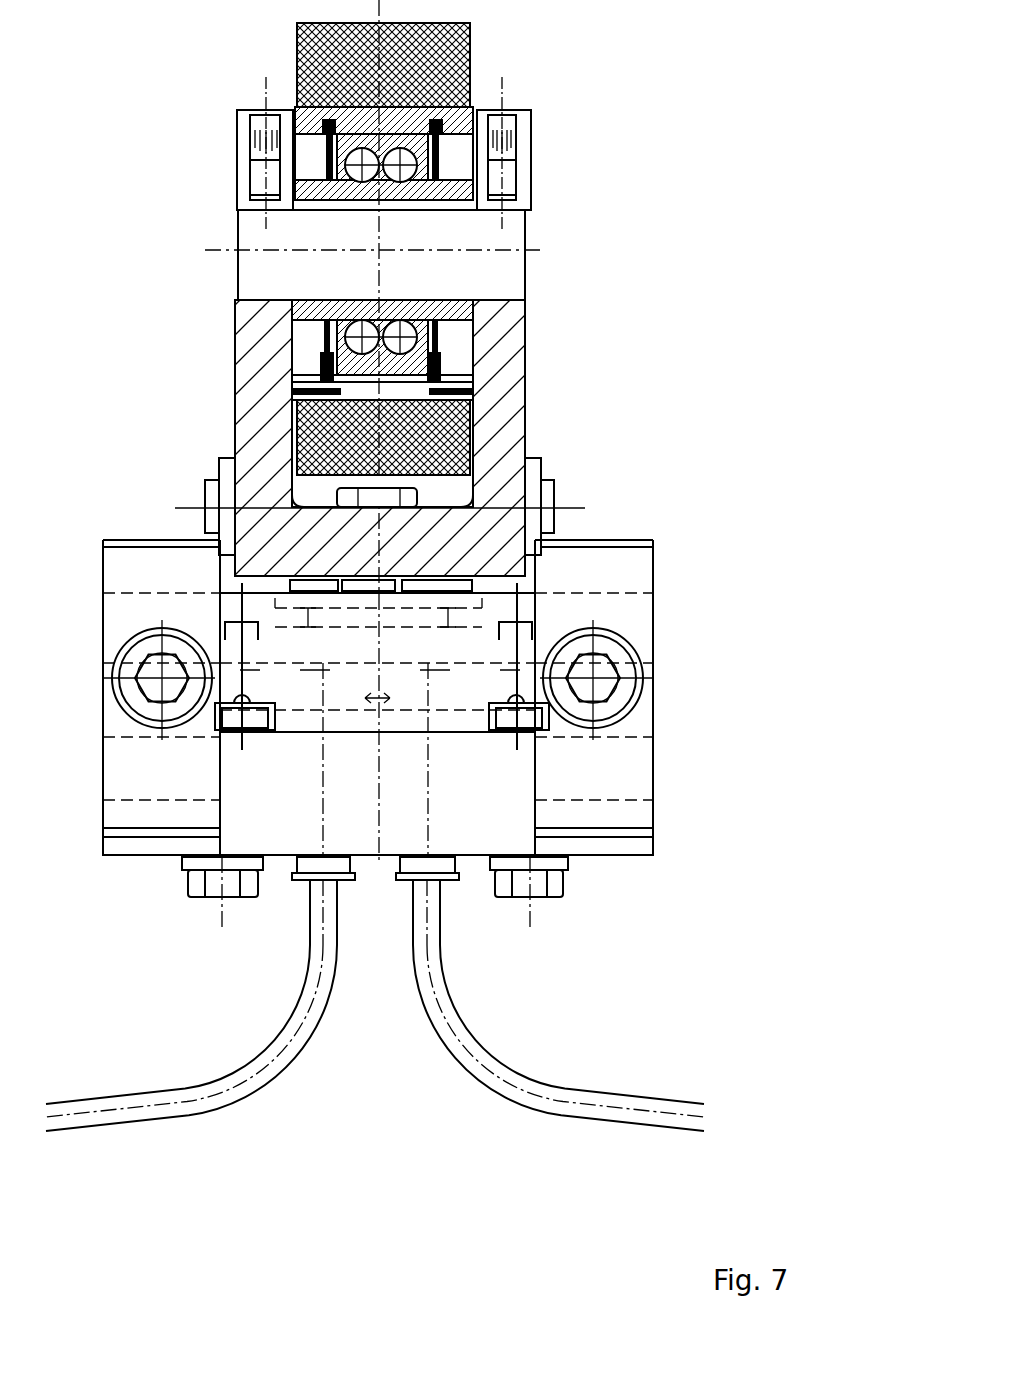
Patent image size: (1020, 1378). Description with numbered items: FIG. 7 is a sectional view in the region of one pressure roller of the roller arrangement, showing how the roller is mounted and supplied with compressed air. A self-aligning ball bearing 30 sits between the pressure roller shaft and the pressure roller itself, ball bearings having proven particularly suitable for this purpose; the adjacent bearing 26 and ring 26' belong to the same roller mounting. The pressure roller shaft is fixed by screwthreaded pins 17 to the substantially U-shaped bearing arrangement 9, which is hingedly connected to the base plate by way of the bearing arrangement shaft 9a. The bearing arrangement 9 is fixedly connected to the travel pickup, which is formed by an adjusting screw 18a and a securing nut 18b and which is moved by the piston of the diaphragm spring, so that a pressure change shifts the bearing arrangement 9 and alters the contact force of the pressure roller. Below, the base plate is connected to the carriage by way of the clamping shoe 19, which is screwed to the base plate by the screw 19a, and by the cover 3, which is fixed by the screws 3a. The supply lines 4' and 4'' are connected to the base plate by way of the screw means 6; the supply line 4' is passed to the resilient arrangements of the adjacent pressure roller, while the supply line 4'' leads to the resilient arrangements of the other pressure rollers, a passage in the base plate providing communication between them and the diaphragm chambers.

The screwthreaded pins 17 is at (500, 167).
The upper bearing block 26 is at (451, 65).
The ring 26' is at (443, 255).
The self-aligning ball bearing 30 is at (430, 347).
The bearing arrangement 9 is at (508, 417).
The securing nut 18b is at (413, 500).
The bearing arrangement shaft 9a is at (544, 529).
The adjusting screw 18a is at (653, 592).
The screw 19a is at (603, 675).
The clamping shoe 19 is at (638, 772).
The cover 3 is at (640, 847).
The screws 3a is at (562, 882).
The screw means 6 is at (330, 867).
The supply line 4'' is at (191, 1088).
The supply line 4' is at (558, 1088).